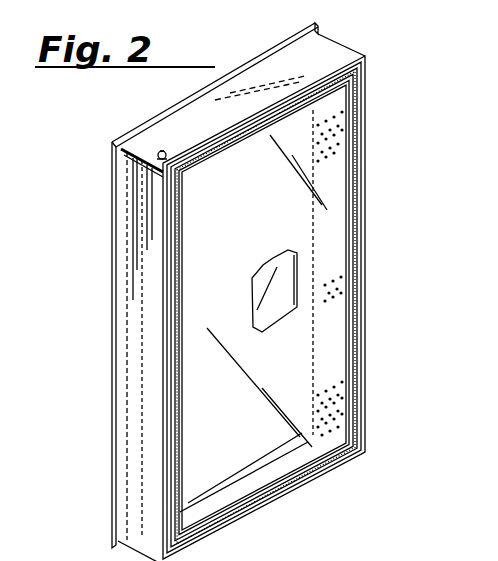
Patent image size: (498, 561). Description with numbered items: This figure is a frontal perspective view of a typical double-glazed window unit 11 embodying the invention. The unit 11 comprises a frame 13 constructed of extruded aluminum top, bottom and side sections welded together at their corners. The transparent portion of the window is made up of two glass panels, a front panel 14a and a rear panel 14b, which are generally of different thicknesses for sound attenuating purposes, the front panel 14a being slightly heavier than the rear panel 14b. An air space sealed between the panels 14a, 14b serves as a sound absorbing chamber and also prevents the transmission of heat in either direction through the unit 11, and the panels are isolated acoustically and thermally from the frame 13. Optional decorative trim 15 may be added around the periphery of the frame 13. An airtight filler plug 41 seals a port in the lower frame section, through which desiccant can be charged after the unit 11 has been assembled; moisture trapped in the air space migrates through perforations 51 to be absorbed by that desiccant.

The window unit 11 is at (378, 205).
The frame 13 is at (143, 138).
The front panel 14a is at (330, 243).
The rear panel 14b is at (280, 292).
The decorative trim 15 is at (117, 192).
The filler plug 41 is at (152, 158).
The perforations 51 is at (332, 418).